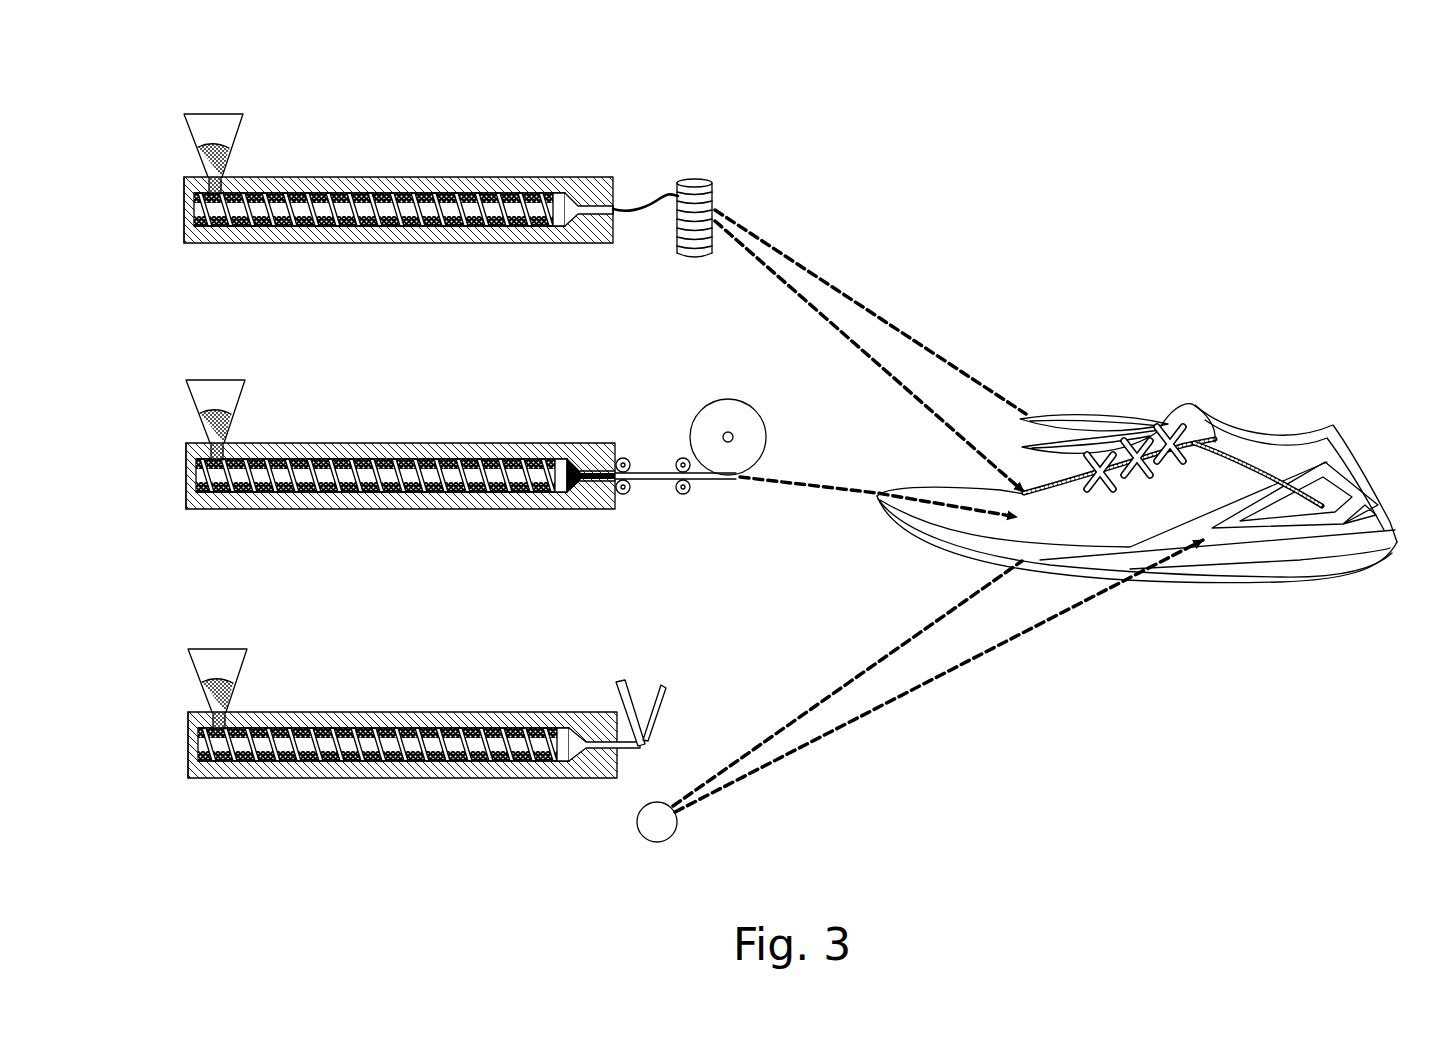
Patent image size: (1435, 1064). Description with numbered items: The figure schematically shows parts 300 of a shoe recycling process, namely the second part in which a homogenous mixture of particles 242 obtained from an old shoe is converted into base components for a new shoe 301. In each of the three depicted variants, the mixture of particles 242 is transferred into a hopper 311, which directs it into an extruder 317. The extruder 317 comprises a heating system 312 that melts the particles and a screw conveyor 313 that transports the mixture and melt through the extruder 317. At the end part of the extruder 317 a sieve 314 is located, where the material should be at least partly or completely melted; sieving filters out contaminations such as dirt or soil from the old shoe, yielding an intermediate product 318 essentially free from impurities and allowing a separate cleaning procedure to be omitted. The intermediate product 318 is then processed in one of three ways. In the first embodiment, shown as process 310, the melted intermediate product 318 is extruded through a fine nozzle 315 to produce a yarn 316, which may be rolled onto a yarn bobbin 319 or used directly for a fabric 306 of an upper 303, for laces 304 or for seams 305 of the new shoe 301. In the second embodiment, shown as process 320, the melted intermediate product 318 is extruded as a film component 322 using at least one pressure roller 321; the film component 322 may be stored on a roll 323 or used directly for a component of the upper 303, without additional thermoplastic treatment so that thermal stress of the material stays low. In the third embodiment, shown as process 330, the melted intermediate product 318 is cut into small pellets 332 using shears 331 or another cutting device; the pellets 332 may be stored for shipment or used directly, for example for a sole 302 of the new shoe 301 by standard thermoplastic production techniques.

The parts of a recycling process 300 is at (892, 196).
The new shoe 301 is at (1205, 366).
The sole 302 is at (1354, 600).
The upper 303 is at (1368, 440).
The laces 304 is at (1062, 420).
The seams 305 is at (1186, 416).
The fabric 306 is at (1210, 482).
The process 310 is at (574, 268).
The hopper 311 is at (213, 128).
The heating system 312 is at (398, 190).
The screw conveyor 313 is at (256, 210).
The sieve 314 is at (556, 216).
The fine nozzle 315 is at (616, 214).
The yarn 316 is at (666, 196).
The extruder 317 is at (187, 245).
The intermediate product 318 is at (595, 206).
The yarn bobbin 319 is at (696, 196).
The process 320 is at (570, 460).
The pressure roller 321 is at (668, 520).
The film component 322 is at (658, 423).
The roll 323 is at (728, 401).
The process 330 is at (663, 728).
The shears 331 is at (686, 713).
The pellets 332 is at (664, 859).
The homogenous mixture of particles 242 is at (222, 153).